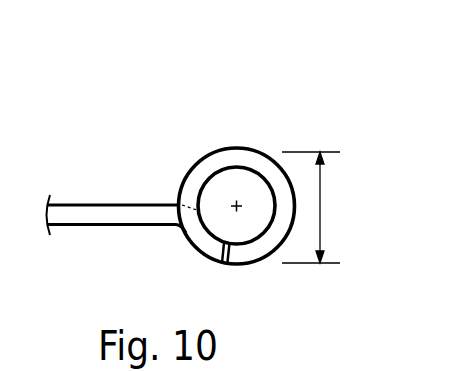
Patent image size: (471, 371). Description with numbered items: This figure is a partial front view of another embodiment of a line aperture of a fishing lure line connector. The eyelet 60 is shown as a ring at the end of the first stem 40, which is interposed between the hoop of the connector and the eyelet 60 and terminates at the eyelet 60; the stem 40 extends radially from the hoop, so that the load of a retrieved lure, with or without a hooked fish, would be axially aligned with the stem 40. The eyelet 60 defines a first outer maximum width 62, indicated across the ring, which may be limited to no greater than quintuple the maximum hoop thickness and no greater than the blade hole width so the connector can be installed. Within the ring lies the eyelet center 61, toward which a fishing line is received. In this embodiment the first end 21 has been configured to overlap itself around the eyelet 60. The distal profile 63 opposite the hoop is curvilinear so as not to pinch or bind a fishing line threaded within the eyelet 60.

The eyelet 60 is at (262, 162).
The eyelet center 61 is at (233, 202).
The first outer maximum width 62 is at (320, 213).
The distal profile 63 is at (268, 208).
The first end 21 is at (213, 248).
The first stem 40 is at (57, 217).